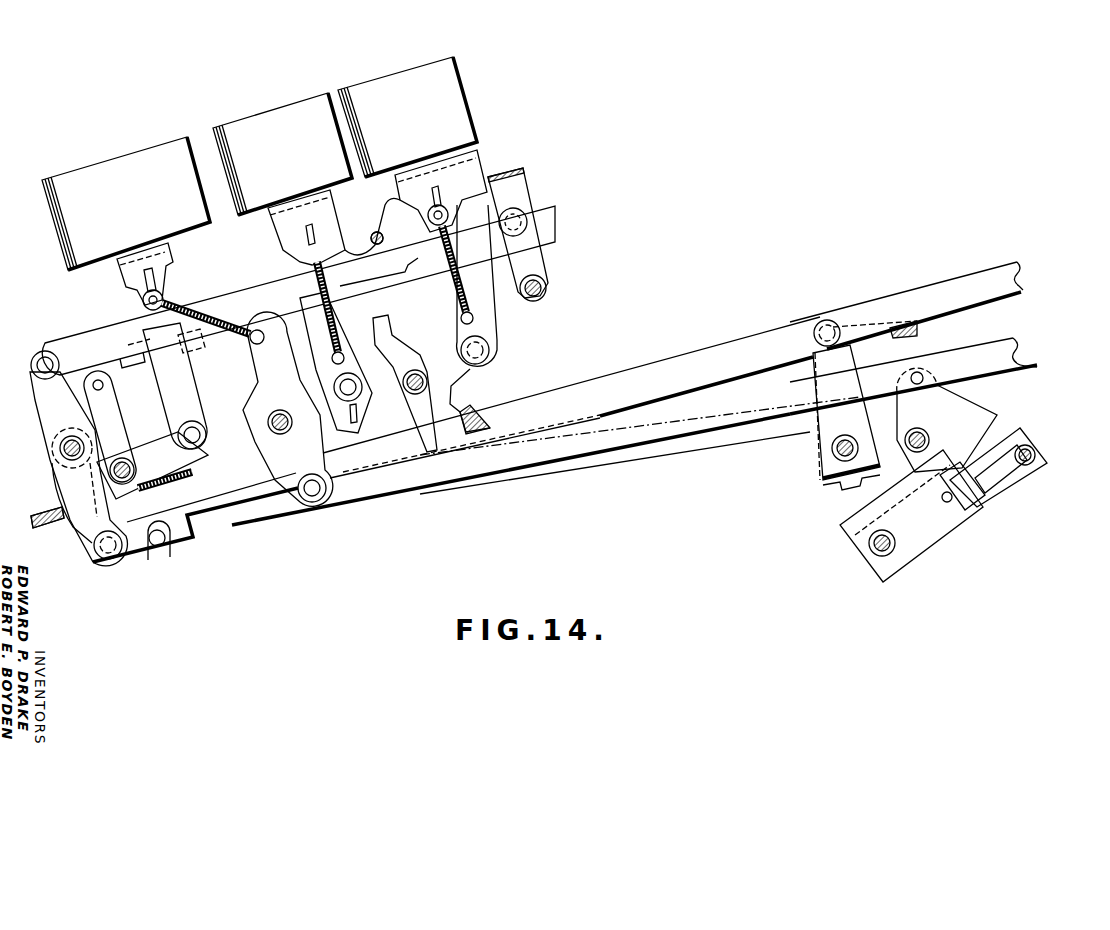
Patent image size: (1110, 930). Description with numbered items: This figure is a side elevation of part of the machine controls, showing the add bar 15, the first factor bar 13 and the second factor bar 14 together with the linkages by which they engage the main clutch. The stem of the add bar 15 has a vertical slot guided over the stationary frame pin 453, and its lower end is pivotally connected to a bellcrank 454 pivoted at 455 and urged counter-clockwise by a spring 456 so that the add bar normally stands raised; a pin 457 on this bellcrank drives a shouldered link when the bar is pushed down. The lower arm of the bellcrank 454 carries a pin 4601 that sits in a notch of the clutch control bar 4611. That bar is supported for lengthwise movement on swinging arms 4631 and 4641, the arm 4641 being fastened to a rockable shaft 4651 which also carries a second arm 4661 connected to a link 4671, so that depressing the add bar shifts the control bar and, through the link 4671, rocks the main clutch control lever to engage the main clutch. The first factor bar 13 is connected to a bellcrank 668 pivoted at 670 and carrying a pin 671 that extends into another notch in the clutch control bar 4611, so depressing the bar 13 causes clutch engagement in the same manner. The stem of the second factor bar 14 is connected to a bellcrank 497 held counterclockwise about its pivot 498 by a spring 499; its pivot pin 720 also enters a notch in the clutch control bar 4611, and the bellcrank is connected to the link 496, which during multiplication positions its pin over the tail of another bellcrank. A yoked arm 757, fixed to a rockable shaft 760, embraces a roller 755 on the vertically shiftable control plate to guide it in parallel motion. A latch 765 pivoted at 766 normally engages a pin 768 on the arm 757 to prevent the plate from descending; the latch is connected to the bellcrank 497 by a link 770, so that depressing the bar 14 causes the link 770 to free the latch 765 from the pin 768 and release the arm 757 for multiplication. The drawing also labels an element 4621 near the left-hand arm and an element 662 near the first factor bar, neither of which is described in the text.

The first factor bar 13 is at (418, 72).
The second factor bar 14 is at (305, 103).
The add bar 15 is at (153, 156).
The stationary frame pin 453 is at (162, 296).
The spring 499 is at (240, 342).
The pin 457 is at (95, 389).
The pivot 455 is at (125, 460).
The pivot pin 4621 is at (60, 449).
The bellcrank 454 is at (196, 452).
The spring 456 is at (196, 476).
The swinging arm 4631 is at (92, 540).
The pin 4601 is at (162, 545).
The spring 662 is at (458, 308).
The pivot 670 is at (417, 370).
The bellcrank 668 is at (470, 372).
The pin 671 is at (484, 424).
The pivot 498 is at (280, 434).
The bellcrank 497 is at (290, 478).
The pivot pin 720 is at (313, 502).
The clutch control bar 4611 is at (573, 386).
The second arm 4661 is at (810, 364).
The link 770 is at (736, 450).
The swinging arm 4641 is at (813, 440).
The rockable shaft 4651 is at (820, 474).
The link 4671 is at (936, 292).
The link 496 is at (1016, 338).
The latch 765 is at (990, 421).
The roller 755 is at (1037, 455).
The pivot 766 is at (917, 453).
The yoked arm 757 is at (935, 533).
The pin 768 is at (952, 502).
The rockable shaft 760 is at (870, 553).